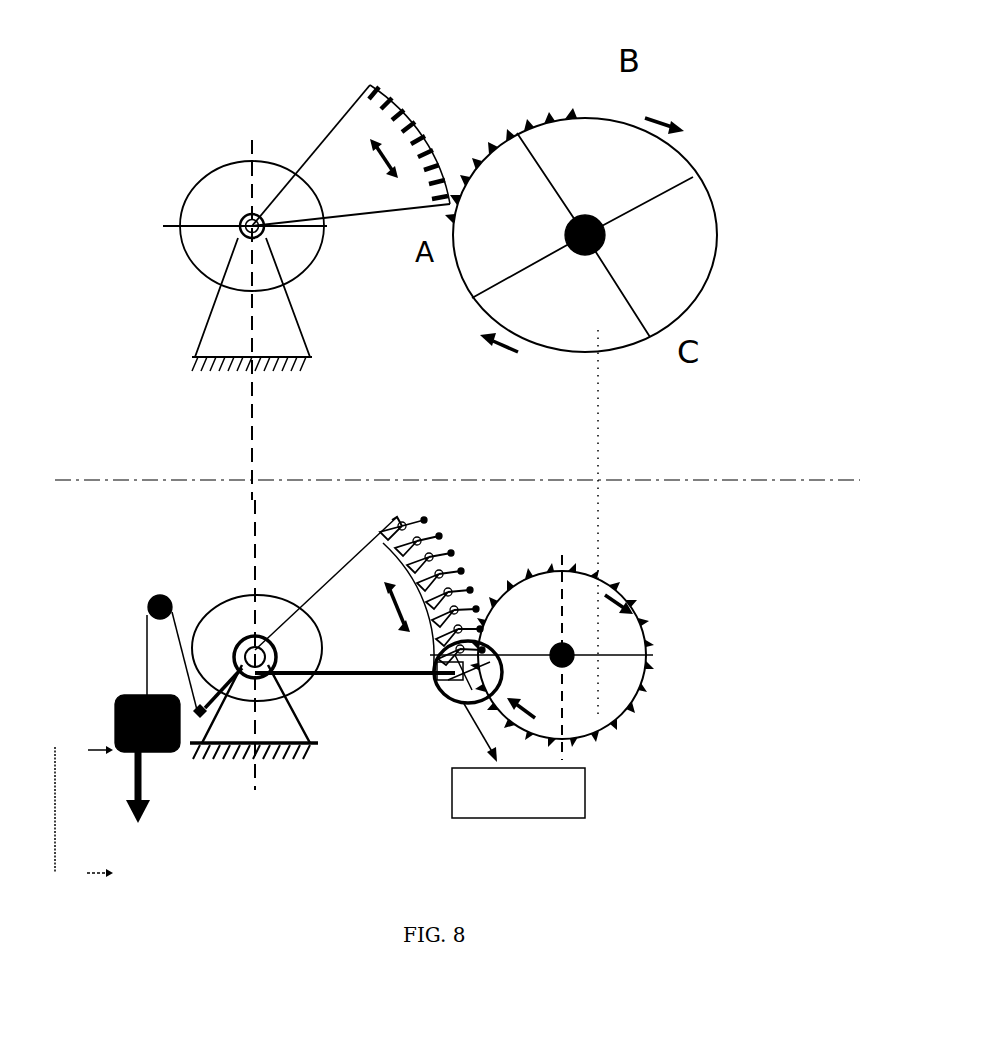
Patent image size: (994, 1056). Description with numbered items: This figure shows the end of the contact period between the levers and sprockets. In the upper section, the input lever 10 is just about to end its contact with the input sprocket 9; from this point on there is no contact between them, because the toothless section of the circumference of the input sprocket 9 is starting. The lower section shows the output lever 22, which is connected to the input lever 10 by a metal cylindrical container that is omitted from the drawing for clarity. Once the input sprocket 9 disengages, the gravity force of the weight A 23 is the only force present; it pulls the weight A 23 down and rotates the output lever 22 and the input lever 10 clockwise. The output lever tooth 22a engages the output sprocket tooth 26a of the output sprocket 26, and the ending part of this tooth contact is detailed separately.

The input lever 10 is at (323, 147).
The input sprocket 9 is at (558, 162).
The output lever 22 is at (357, 653).
The output lever tooth 22a is at (447, 690).
The weight A 23 is at (132, 780).
The output sprocket 26 is at (575, 588).
The output sprocket tooth 26a is at (475, 633).